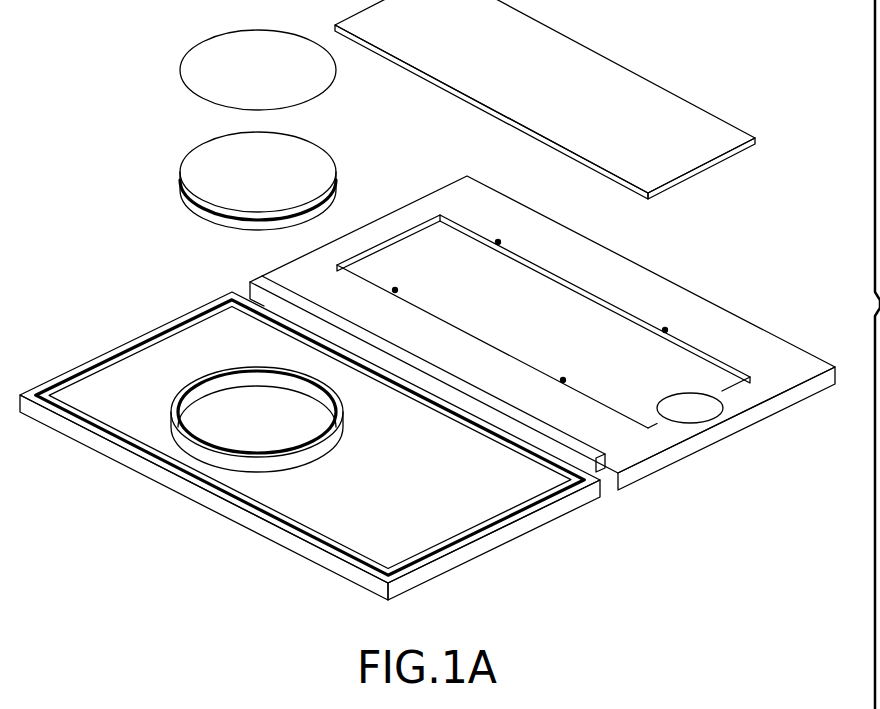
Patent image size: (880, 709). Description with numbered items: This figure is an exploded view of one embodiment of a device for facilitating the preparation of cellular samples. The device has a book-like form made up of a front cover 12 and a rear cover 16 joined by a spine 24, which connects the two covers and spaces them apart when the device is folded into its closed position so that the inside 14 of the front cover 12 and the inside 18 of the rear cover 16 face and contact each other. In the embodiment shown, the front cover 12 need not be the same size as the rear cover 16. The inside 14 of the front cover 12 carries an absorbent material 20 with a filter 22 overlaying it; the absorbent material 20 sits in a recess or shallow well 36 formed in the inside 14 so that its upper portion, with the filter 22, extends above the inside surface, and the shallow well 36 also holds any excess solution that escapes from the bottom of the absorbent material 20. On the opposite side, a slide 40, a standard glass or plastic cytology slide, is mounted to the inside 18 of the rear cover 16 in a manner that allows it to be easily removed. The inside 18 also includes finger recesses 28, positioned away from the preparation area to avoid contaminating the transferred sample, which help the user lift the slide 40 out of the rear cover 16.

The front cover 12 is at (152, 325).
The inside of the front cover 14 is at (147, 395).
The rear cover 16 is at (412, 203).
The inside of the back cover 18 is at (492, 220).
The absorbent material 20 is at (192, 158).
The filter 22 is at (208, 46).
The spine 24 is at (618, 490).
The finger recesses 28 is at (703, 418).
The recess or shallow well 36 is at (212, 435).
The slide 40 is at (517, 90).